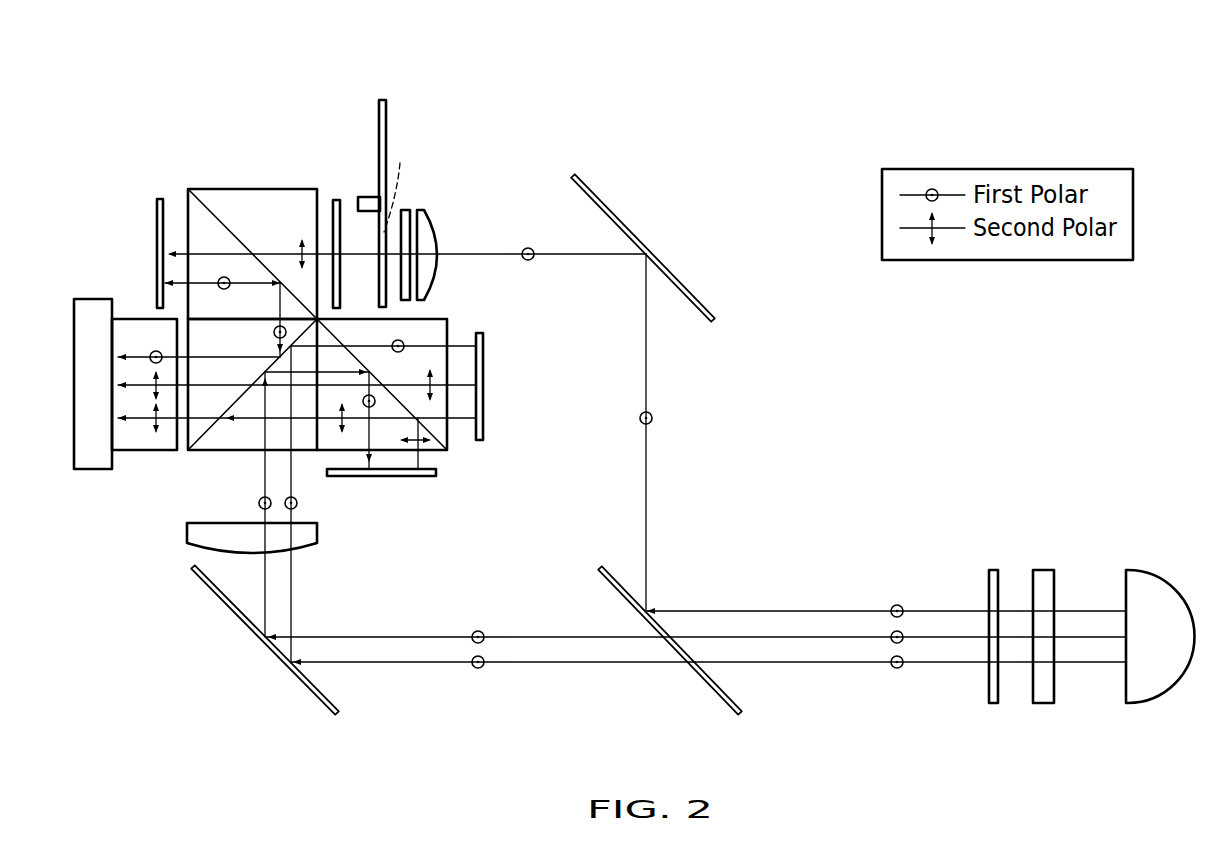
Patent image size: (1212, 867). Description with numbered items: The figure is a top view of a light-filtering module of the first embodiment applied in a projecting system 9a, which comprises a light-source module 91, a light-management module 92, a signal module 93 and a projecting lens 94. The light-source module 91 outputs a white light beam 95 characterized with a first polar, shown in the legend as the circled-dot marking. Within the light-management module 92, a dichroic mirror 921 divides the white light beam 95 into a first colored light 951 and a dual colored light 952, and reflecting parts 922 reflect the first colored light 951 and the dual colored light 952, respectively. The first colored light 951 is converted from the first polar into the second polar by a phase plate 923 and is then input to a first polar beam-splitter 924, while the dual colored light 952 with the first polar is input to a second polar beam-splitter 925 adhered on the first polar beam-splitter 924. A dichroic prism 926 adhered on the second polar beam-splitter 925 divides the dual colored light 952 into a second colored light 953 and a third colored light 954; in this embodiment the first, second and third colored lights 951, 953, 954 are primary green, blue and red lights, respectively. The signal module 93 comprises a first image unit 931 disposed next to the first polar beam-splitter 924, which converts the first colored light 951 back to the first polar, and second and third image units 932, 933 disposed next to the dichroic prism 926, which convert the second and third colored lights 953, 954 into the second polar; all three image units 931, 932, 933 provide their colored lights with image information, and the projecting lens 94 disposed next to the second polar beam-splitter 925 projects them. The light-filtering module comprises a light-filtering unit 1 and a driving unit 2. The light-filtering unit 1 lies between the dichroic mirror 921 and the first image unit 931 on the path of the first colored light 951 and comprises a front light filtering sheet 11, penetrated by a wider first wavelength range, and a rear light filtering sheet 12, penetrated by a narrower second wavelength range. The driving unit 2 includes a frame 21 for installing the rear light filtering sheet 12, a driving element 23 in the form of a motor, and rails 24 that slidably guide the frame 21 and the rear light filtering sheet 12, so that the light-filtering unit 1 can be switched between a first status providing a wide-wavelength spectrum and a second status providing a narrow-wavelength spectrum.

The light-filtering unit 1 is at (481, 133).
The driving unit 2 is at (412, 98).
The front light filtering sheet 11 is at (407, 210).
The rear light filtering sheet 12 is at (401, 182).
The frame 21 is at (387, 305).
The driving element 23 is at (368, 197).
The rails 24 is at (380, 100).
The light-source module 91 is at (1135, 568).
The light-management module 92 is at (617, 174).
The signal module 93 is at (108, 178).
The projecting lens 94 is at (95, 299).
The white light beam 95 is at (803, 610).
The projecting system 9a is at (853, 390).
The dichroic mirror 921 is at (713, 690).
The reflecting parts 922 is at (697, 295).
The phase plate 923 is at (336, 200).
The first polar beam-splitter 924 is at (250, 189).
The second polar beam-splitter 925 is at (207, 452).
The dichroic prism 926 is at (450, 433).
The first image unit 931 is at (157, 199).
The second image unit 932 is at (423, 472).
The third image unit 933 is at (487, 387).
The first colored light 951 is at (500, 254).
The dual colored light 952 is at (263, 488).
The second colored light 953 is at (370, 435).
The third colored light 954 is at (443, 343).